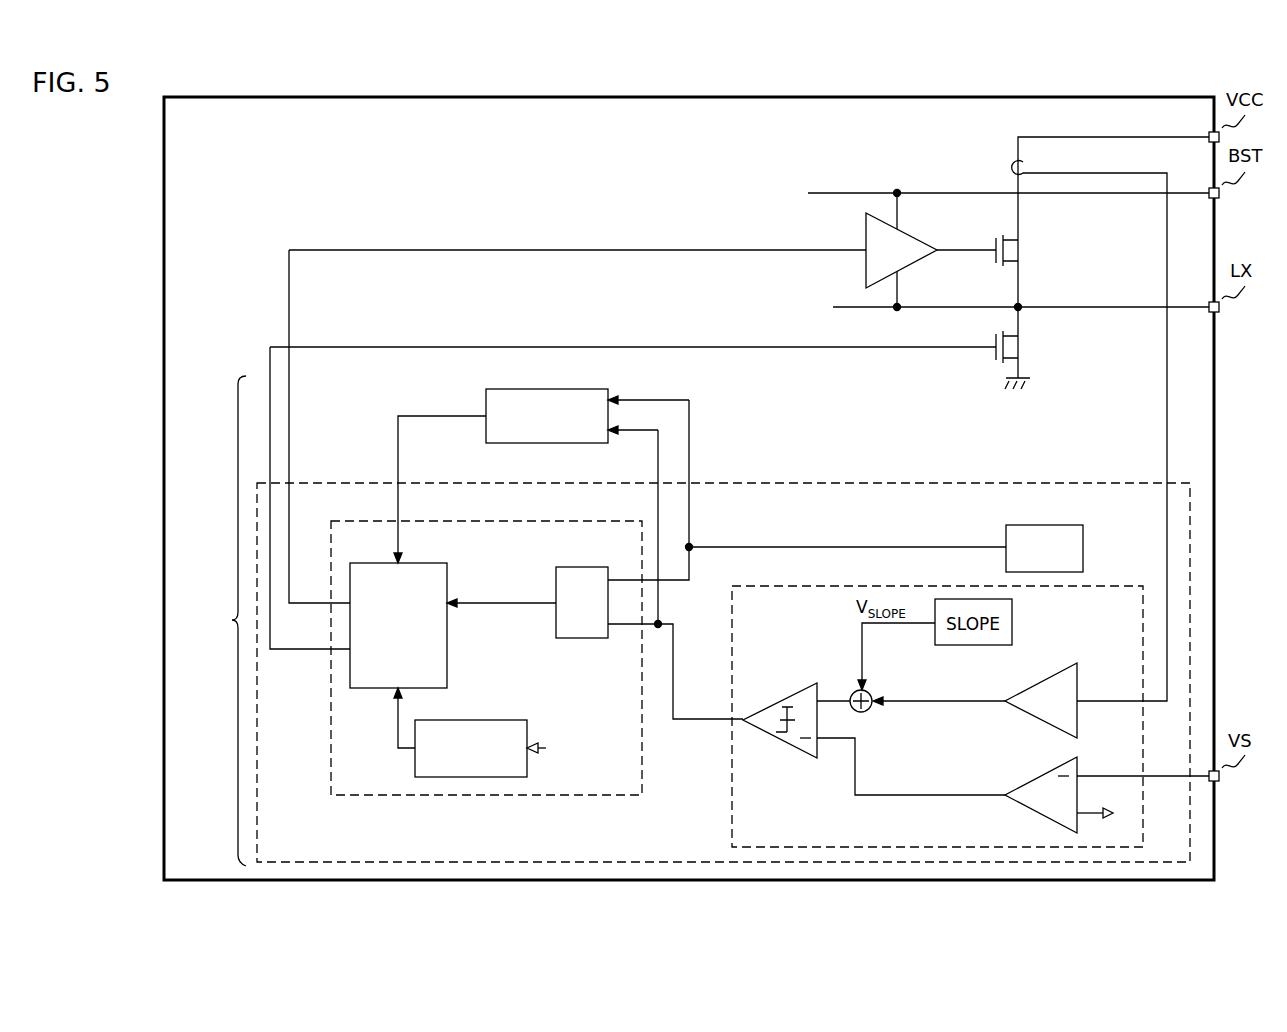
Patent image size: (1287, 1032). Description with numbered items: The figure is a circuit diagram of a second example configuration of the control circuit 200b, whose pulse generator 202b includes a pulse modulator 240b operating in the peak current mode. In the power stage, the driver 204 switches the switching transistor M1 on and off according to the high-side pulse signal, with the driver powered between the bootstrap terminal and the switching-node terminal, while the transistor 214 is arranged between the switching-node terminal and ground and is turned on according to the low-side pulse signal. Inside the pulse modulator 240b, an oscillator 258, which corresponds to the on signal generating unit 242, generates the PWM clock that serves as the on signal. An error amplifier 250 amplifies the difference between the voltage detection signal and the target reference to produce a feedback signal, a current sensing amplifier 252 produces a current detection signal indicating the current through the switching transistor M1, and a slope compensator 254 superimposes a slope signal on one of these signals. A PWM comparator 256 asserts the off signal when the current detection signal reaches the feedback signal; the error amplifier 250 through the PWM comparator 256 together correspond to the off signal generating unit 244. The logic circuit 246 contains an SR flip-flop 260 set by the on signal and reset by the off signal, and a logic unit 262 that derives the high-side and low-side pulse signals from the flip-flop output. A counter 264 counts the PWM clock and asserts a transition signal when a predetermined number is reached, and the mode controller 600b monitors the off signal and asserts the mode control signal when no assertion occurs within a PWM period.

The control circuit 200b is at (164, 762).
The pulse generator 202b is at (211, 621).
The driver 204 is at (910, 234).
The switching transistor M1 is at (1027, 251).
The transistor 214 is at (1027, 343).
The mode controller 600b is at (533, 384).
The pulse modulator 240b is at (339, 467).
The logic circuit 246 is at (527, 521).
The logic unit 262 is at (411, 562).
The SR flip-flop 260 is at (579, 640).
The counter 264 is at (499, 708).
The oscillator 258 is at (913, 533).
The on signal generating unit 242 is at (1020, 525).
The off signal generating unit 244 is at (731, 812).
The slope compensator 254 is at (871, 692).
The current sensing amplifier 252 is at (1031, 719).
The PWM comparator 256 is at (784, 744).
The error amplifier 250 is at (1031, 811).